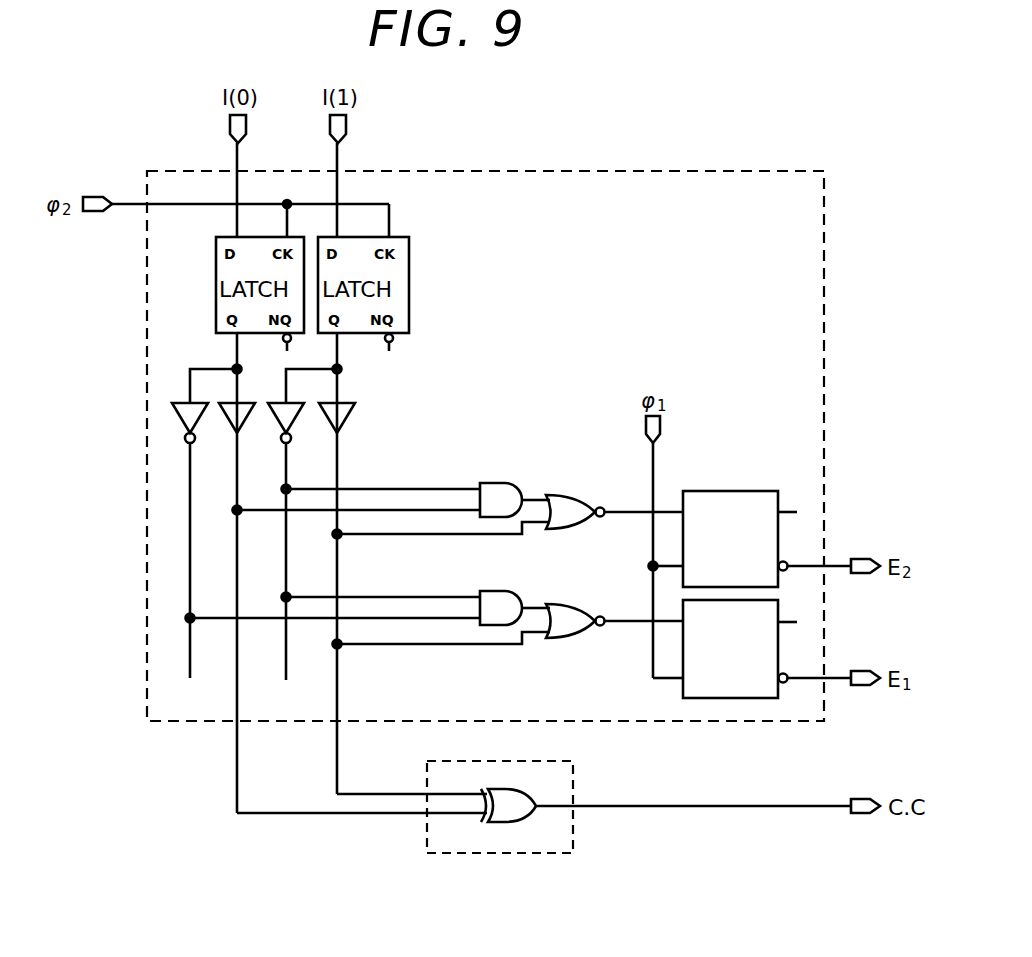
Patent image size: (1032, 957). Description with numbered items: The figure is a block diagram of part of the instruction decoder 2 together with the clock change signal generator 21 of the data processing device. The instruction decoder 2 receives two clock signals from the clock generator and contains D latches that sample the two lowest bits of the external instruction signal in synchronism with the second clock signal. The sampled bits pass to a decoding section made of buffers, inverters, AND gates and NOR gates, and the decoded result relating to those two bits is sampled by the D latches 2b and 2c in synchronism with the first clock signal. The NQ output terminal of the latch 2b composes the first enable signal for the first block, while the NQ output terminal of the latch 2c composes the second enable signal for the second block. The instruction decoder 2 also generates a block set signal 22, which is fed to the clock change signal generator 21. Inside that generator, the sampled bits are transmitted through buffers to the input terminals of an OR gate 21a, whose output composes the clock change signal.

The instruction decoder 2 is at (180, 722).
The D latch 2b is at (735, 698).
The D latch 2c is at (730, 491).
The clock change signal generator 21 is at (463, 853).
The OR gate 21a is at (508, 822).
The block set signal 22 is at (361, 781).